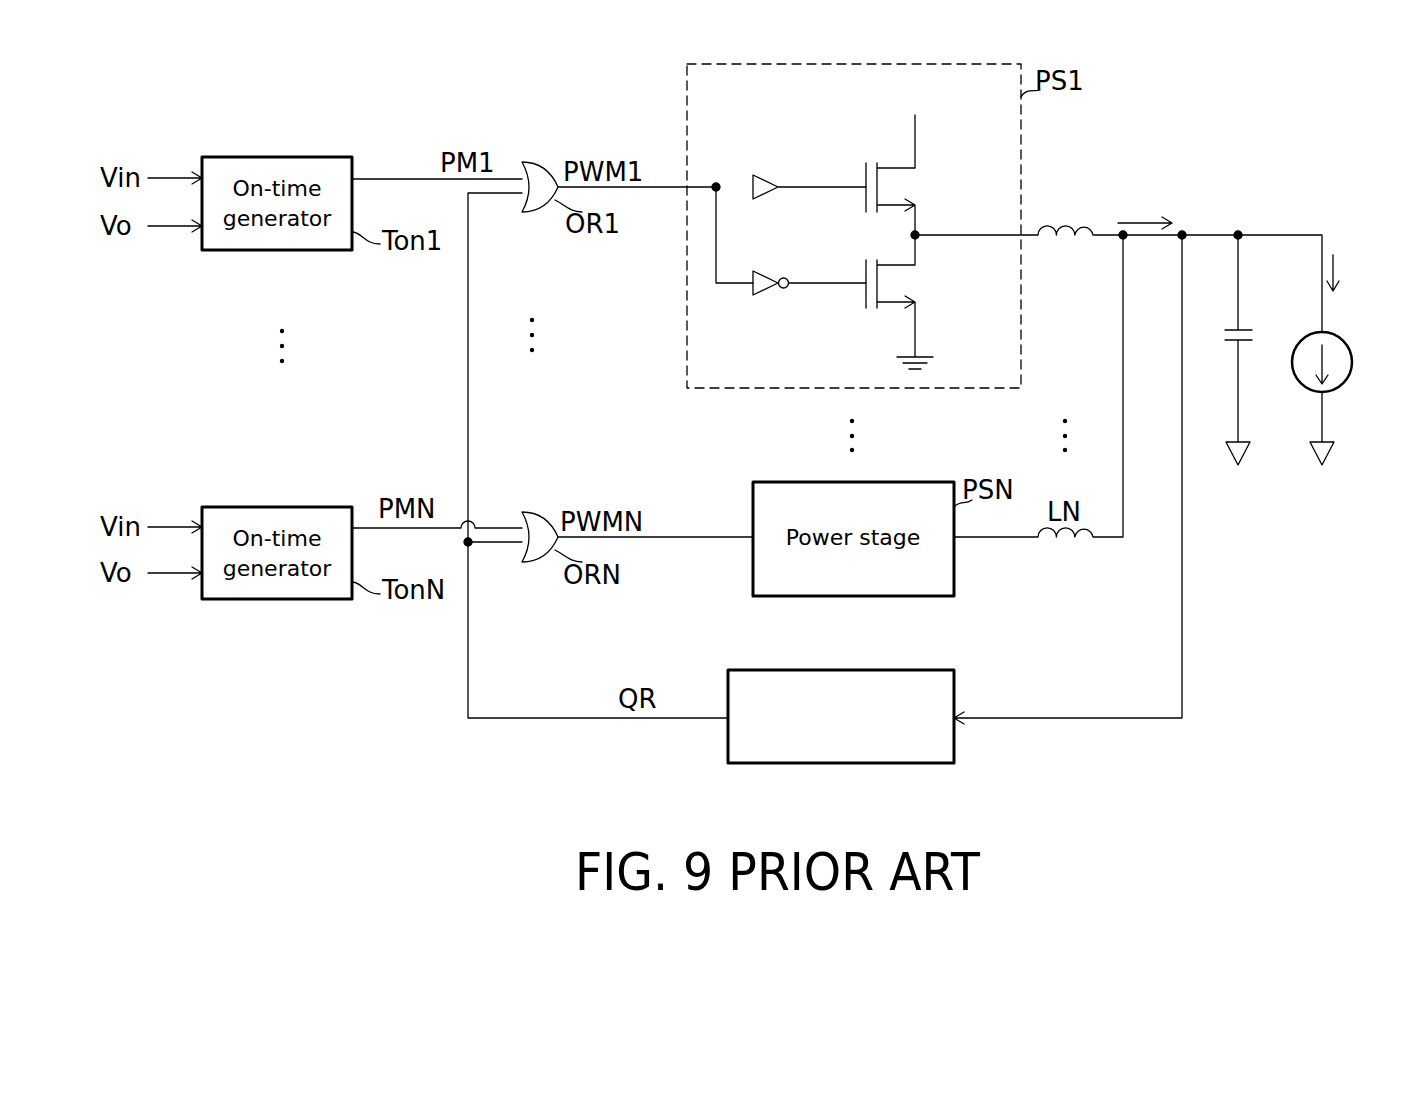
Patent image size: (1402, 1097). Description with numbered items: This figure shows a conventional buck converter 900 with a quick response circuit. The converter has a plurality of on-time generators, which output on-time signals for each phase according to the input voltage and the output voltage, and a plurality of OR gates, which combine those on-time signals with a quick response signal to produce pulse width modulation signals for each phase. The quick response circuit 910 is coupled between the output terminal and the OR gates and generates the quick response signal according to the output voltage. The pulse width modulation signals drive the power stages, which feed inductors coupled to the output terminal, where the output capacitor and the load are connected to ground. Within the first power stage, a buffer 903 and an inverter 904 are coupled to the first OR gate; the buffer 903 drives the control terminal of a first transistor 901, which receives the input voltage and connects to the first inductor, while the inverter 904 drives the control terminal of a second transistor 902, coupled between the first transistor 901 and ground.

The buck converter 900 is at (1264, 110).
The first transistor 901 is at (907, 188).
The second transistor 902 is at (907, 285).
The buffer 903 is at (795, 165).
The inverter 904 is at (795, 261).
The quick response circuit 910 is at (797, 763).